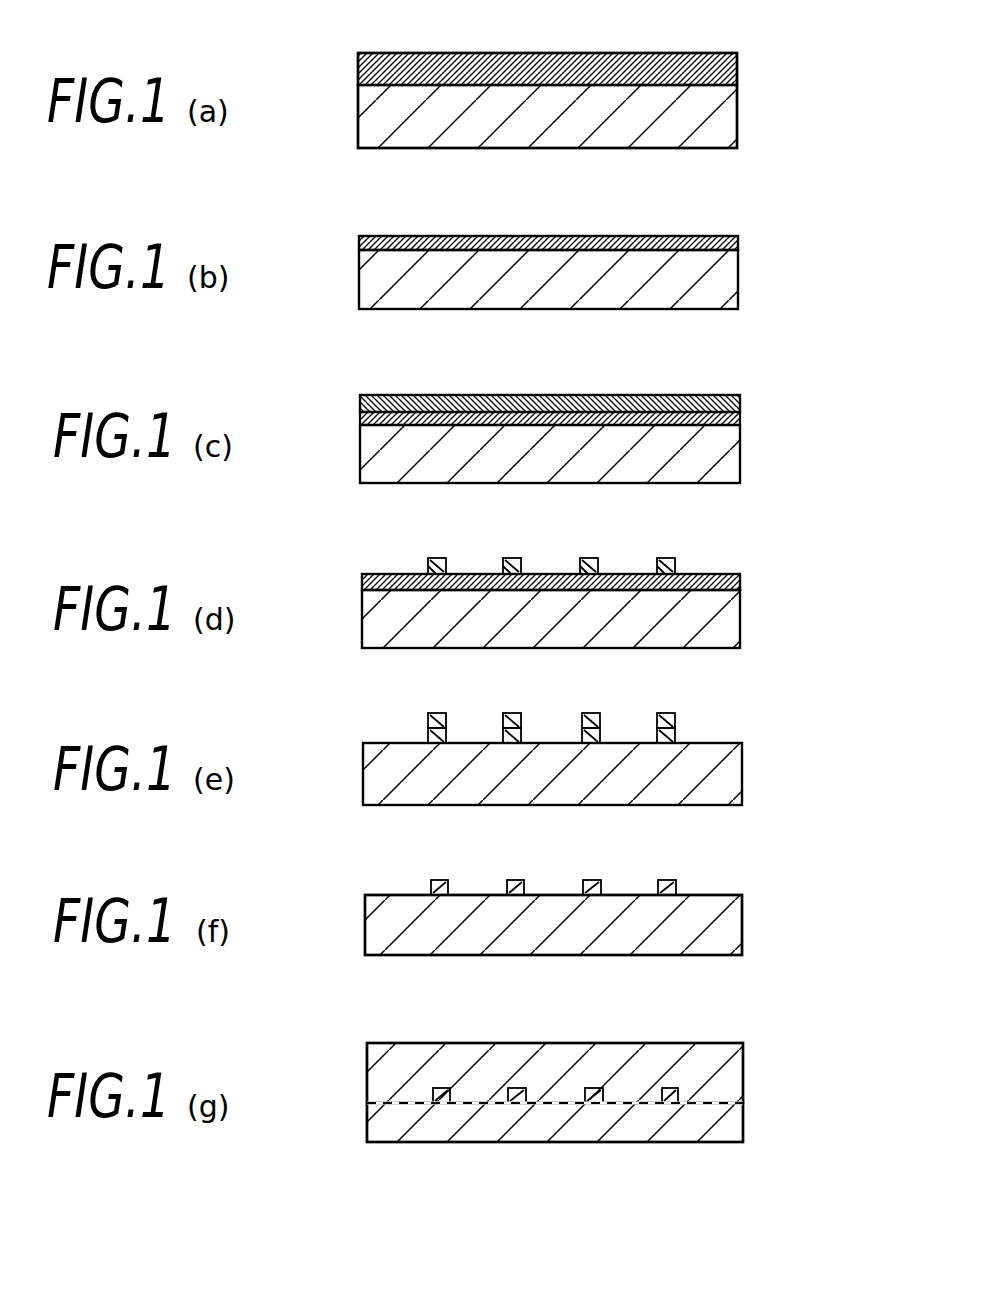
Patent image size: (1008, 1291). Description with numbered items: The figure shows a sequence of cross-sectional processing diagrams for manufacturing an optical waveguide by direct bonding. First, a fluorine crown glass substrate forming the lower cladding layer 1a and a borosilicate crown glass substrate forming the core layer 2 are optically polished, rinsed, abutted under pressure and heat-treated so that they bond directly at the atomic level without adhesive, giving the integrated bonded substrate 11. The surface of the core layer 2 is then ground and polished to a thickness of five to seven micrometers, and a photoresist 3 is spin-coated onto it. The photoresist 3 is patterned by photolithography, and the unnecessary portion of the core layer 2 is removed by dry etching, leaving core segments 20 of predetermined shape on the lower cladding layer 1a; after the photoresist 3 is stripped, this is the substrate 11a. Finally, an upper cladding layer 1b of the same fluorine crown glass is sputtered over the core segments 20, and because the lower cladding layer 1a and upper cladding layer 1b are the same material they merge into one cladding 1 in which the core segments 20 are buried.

The cladding 1 is at (330, 1069).
The lower cladding layer 1a is at (725, 123).
The upper cladding layer 1b is at (367, 1073).
The core layer 2 is at (737, 70).
The photoresist 3 is at (740, 395).
The integrated bonded substrate 11 is at (835, 23).
The substrate provided with core segments 11a is at (792, 846).
The core segments 20 is at (675, 732).